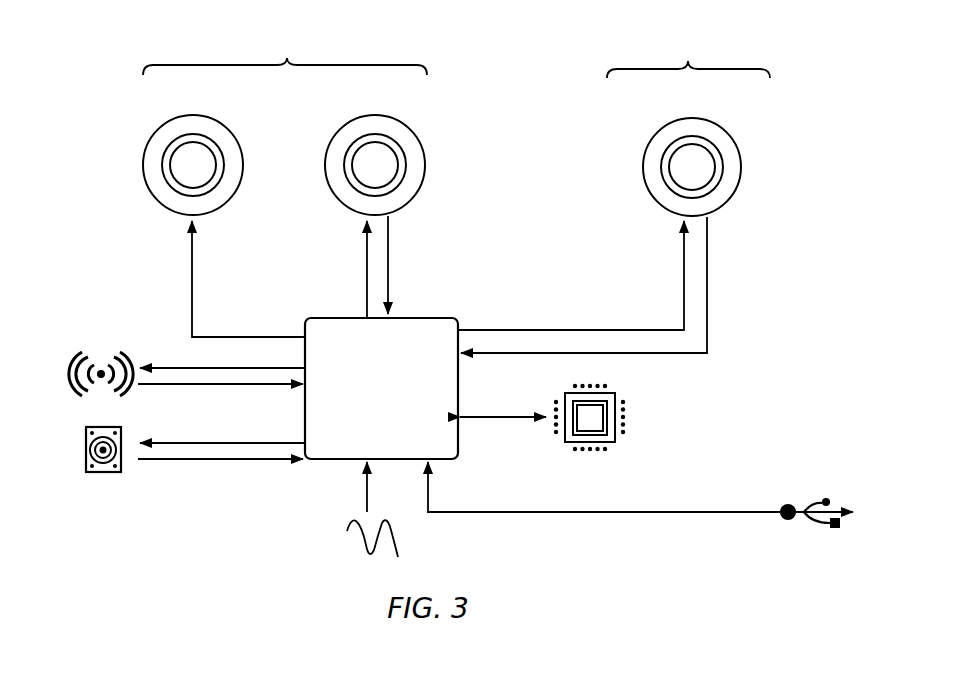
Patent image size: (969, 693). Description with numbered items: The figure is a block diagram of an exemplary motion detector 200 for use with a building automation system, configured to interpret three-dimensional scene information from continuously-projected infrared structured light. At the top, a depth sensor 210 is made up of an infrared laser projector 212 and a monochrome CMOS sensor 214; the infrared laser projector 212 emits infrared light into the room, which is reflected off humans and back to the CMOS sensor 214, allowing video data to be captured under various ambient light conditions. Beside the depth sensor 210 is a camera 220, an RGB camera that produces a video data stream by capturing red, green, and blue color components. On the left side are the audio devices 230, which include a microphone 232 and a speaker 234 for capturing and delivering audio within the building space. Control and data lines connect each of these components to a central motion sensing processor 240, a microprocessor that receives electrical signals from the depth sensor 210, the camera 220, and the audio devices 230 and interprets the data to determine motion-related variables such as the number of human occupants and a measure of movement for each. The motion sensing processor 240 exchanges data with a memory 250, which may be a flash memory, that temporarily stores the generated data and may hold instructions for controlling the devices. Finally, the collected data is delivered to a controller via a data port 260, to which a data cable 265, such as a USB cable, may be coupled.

The motion detector 200 is at (105, 56).
The depth sensor 210 is at (449, 98).
The infrared laser projector 212 is at (243, 164).
The monochrome CMOS sensor 214 is at (425, 164).
The camera 220 is at (742, 166).
The audio devices 230 is at (66, 419).
The microphone 232 is at (100, 367).
The speaker 234 is at (104, 473).
The motion sensing processor 240 is at (458, 318).
The memory 250 is at (618, 396).
The data port 260 is at (428, 497).
The data cable 265 is at (710, 512).